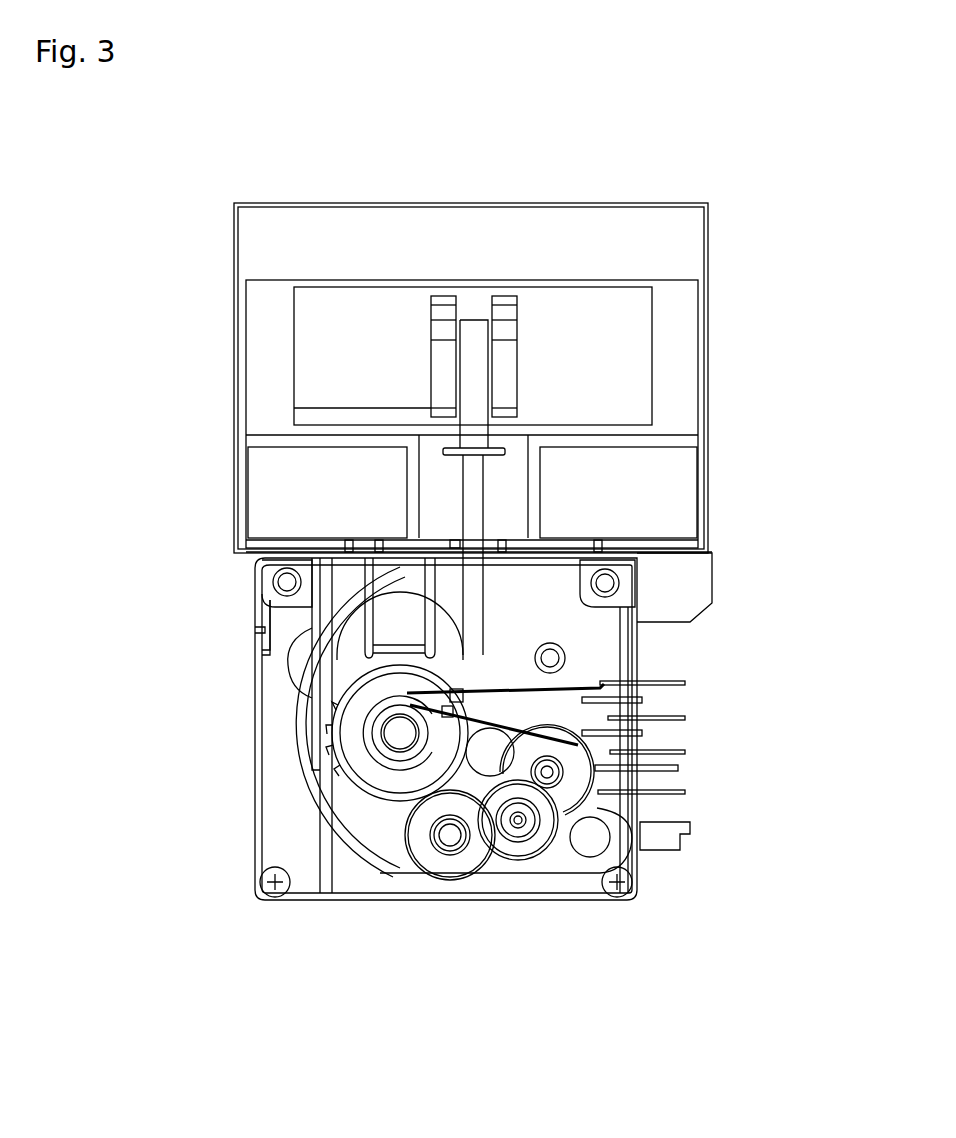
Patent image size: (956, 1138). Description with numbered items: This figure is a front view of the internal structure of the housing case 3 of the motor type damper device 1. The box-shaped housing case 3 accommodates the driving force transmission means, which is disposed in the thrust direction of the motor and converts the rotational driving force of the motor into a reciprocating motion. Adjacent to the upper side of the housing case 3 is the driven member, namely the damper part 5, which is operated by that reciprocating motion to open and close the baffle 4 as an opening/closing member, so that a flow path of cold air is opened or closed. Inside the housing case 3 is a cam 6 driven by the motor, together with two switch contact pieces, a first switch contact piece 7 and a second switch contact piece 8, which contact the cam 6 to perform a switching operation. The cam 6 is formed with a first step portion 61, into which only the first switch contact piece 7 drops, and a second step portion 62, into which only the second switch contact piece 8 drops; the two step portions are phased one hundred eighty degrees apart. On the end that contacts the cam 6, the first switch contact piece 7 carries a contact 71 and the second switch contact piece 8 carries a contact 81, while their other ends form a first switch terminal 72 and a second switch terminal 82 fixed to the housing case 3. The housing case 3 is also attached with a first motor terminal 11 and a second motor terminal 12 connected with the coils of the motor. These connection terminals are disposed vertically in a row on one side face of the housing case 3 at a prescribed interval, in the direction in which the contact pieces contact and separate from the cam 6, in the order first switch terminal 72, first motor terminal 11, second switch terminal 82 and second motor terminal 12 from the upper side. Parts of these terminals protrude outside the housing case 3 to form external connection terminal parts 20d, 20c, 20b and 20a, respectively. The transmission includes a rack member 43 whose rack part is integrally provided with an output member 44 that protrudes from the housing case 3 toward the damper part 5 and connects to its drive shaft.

The motor type damper device 1 is at (203, 402).
The housing case 3 is at (248, 812).
The baffle 4 is at (624, 341).
The damper part 5 is at (236, 297).
The cam 6 is at (395, 765).
The first step portion 61 is at (413, 770).
The second step portion 62 is at (426, 742).
The first switch contact piece 7 is at (635, 627).
The second switch contact piece 8 is at (590, 665).
The first motor terminal 11 is at (685, 718).
The second motor terminal 12 is at (685, 792).
The external connection terminal part 20a is at (682, 845).
The external connection terminal part 20b is at (680, 768).
The external connection terminal part 20c is at (645, 733).
The external connection terminal part 20d is at (645, 700).
The rack member 43 is at (328, 596).
The output member 44 is at (643, 567).
The contact 71 is at (455, 690).
The first switch terminal 72 is at (685, 683).
The contact 81 is at (450, 710).
The second switch terminal 82 is at (685, 752).